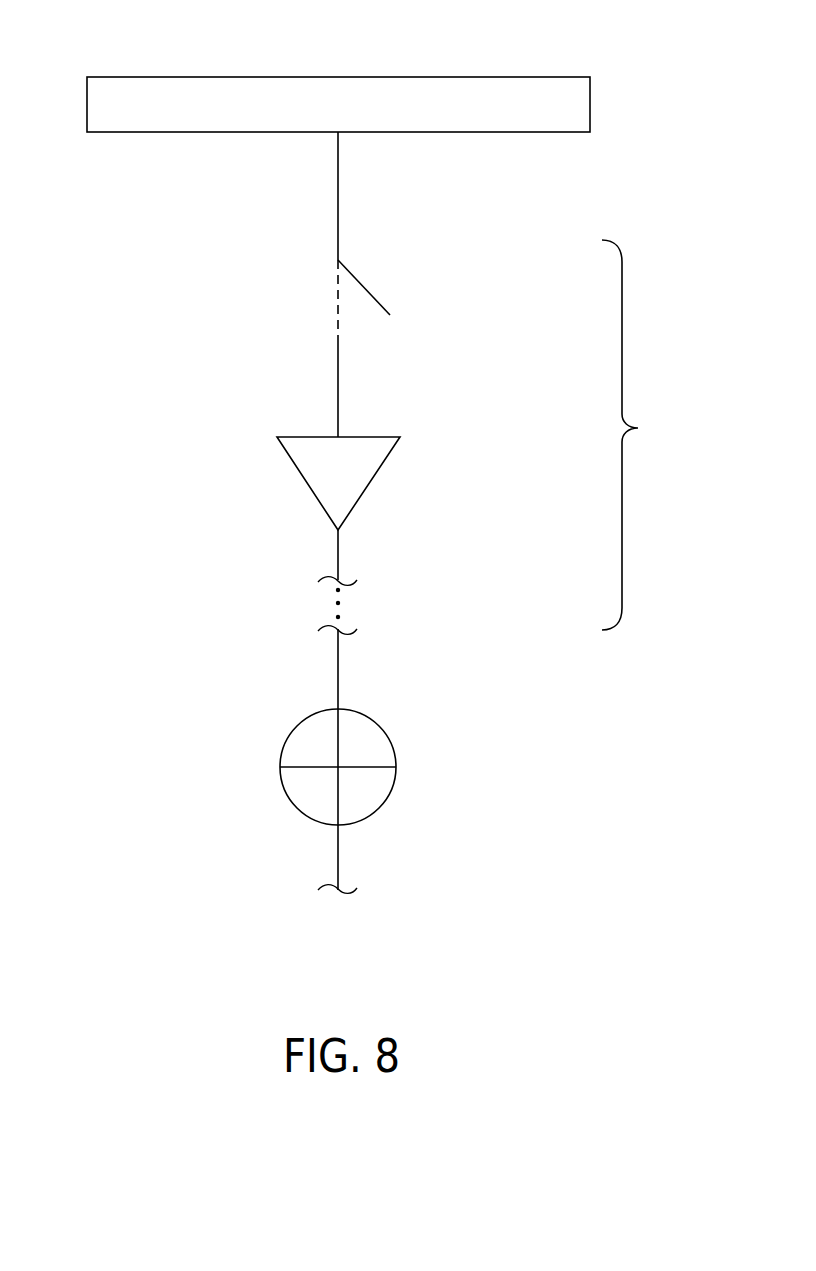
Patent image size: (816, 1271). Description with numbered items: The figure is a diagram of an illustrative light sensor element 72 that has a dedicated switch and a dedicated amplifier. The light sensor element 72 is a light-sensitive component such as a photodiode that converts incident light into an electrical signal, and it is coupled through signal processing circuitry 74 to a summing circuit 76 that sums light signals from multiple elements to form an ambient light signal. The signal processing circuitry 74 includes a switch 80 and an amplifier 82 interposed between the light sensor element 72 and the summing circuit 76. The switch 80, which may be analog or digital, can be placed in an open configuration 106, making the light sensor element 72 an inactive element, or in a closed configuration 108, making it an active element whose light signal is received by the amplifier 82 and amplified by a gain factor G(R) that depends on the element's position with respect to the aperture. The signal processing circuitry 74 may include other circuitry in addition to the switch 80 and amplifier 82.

The light sensor element 72 is at (457, 87).
The signal processing circuitry 74 is at (636, 435).
The summing circuit 76 is at (360, 731).
The switch 80 is at (394, 281).
The amplifier 82 is at (431, 444).
The open configuration 106 is at (362, 287).
The closed configuration 108 is at (338, 284).